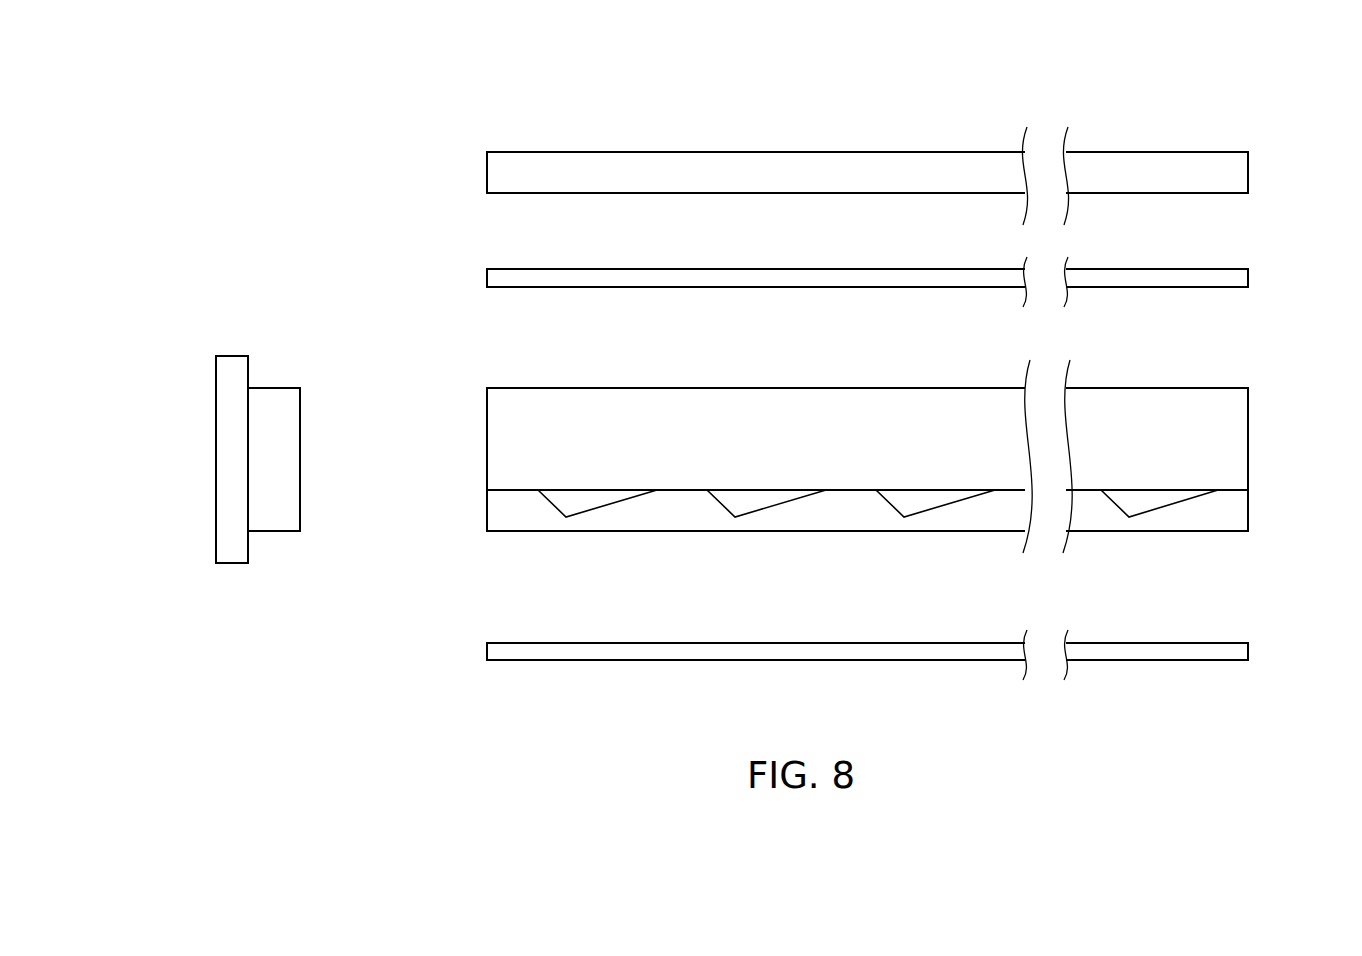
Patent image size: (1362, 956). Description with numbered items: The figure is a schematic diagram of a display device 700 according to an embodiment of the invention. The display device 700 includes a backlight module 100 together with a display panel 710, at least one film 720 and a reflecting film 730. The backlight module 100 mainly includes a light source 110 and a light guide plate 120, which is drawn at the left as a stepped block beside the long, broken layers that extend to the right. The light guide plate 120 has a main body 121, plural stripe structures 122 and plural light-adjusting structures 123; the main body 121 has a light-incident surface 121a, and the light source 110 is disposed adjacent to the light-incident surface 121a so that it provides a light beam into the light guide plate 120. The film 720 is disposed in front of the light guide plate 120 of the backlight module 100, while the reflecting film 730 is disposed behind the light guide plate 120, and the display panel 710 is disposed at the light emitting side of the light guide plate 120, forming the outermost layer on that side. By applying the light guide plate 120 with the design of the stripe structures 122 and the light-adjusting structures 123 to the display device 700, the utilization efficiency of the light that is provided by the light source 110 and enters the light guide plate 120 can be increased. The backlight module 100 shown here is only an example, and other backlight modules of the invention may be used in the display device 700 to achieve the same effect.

The display device 700 is at (217, 119).
The backlight module 100 is at (421, 255).
The light source 110 is at (265, 402).
The light guide plate 120 is at (446, 352).
The main body 121 is at (807, 400).
The light-incident surface 121a is at (486, 468).
The stripe structures 122 is at (853, 517).
The light-adjusting structures 123 is at (753, 503).
The display panel 710 is at (808, 172).
The film 720 is at (1239, 279).
The reflecting film 730 is at (1239, 651).